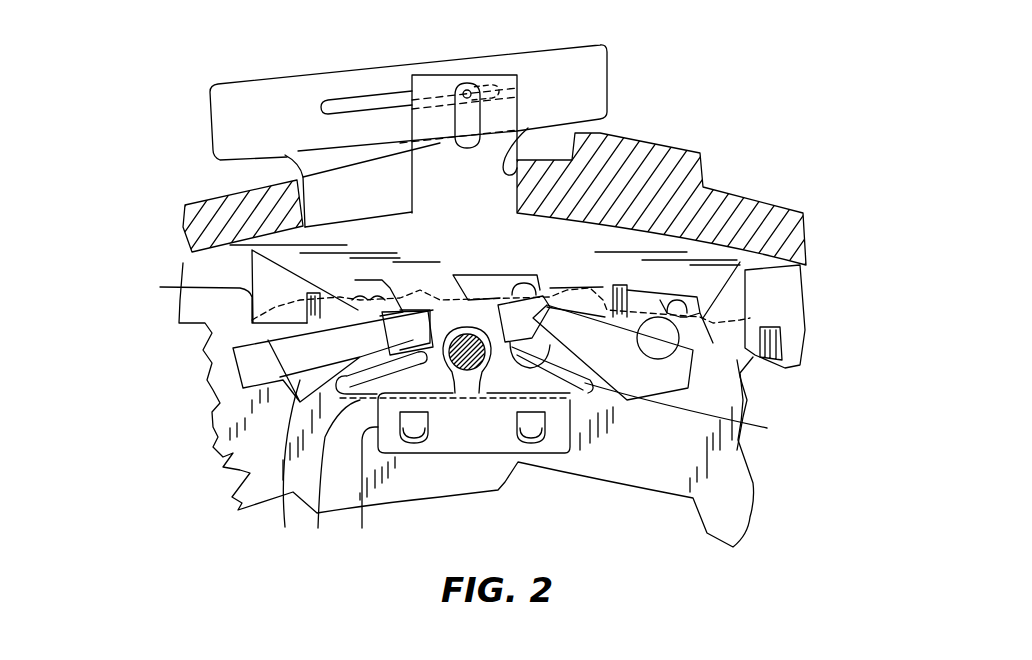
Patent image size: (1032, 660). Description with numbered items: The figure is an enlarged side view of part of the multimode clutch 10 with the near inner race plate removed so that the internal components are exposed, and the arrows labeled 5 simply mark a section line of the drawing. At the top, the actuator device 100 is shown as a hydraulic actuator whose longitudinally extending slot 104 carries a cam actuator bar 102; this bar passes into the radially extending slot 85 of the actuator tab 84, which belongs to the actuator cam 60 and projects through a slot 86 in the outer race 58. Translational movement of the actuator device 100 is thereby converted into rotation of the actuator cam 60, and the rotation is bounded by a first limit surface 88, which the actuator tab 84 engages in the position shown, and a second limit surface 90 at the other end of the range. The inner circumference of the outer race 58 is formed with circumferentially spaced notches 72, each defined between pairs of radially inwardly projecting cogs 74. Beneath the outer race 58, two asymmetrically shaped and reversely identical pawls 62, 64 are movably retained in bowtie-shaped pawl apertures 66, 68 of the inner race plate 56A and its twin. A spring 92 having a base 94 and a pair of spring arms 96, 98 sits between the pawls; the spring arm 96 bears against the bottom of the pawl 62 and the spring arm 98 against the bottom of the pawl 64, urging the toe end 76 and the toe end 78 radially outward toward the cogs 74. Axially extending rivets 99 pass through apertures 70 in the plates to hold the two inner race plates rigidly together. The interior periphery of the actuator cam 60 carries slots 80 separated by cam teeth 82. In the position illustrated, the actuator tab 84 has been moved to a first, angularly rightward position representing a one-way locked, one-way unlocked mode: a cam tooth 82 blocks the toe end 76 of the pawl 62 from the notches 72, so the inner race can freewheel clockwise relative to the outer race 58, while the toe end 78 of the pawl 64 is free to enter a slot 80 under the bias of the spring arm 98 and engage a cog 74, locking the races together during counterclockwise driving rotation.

The multimode clutch 10 is at (105, 108).
The section line 5 is at (807, 124).
The inner race plate 56A is at (730, 517).
The outer race 58 is at (752, 208).
The actuator cam 60 is at (564, 253).
The pawl 62 is at (300, 350).
The pawl 64 is at (682, 367).
The pawl aperture 66 is at (286, 463).
The pawl aperture 68 is at (743, 427).
The aperture 70 is at (467, 373).
The notch 72 is at (280, 255).
The cog 74 is at (200, 288).
The toe end 76 is at (413, 333).
The toe end 78 is at (512, 300).
The slot 80 is at (362, 298).
The cam tooth 82 is at (414, 330).
The actuator tab 84 is at (423, 80).
The radially extending slot 85 is at (467, 88).
The slot 86 is at (354, 205).
The first limit surface 88 is at (528, 128).
The second limit surface 90 is at (285, 155).
The spring 92 is at (600, 425).
The base 94 is at (364, 488).
The spring arm 96 is at (451, 451).
The spring arm 98 is at (553, 392).
The rivet 99 is at (492, 380).
The actuator device 100 is at (212, 86).
The cam actuator bar 102 is at (478, 88).
The longitudinally extending slot 104 is at (400, 96).